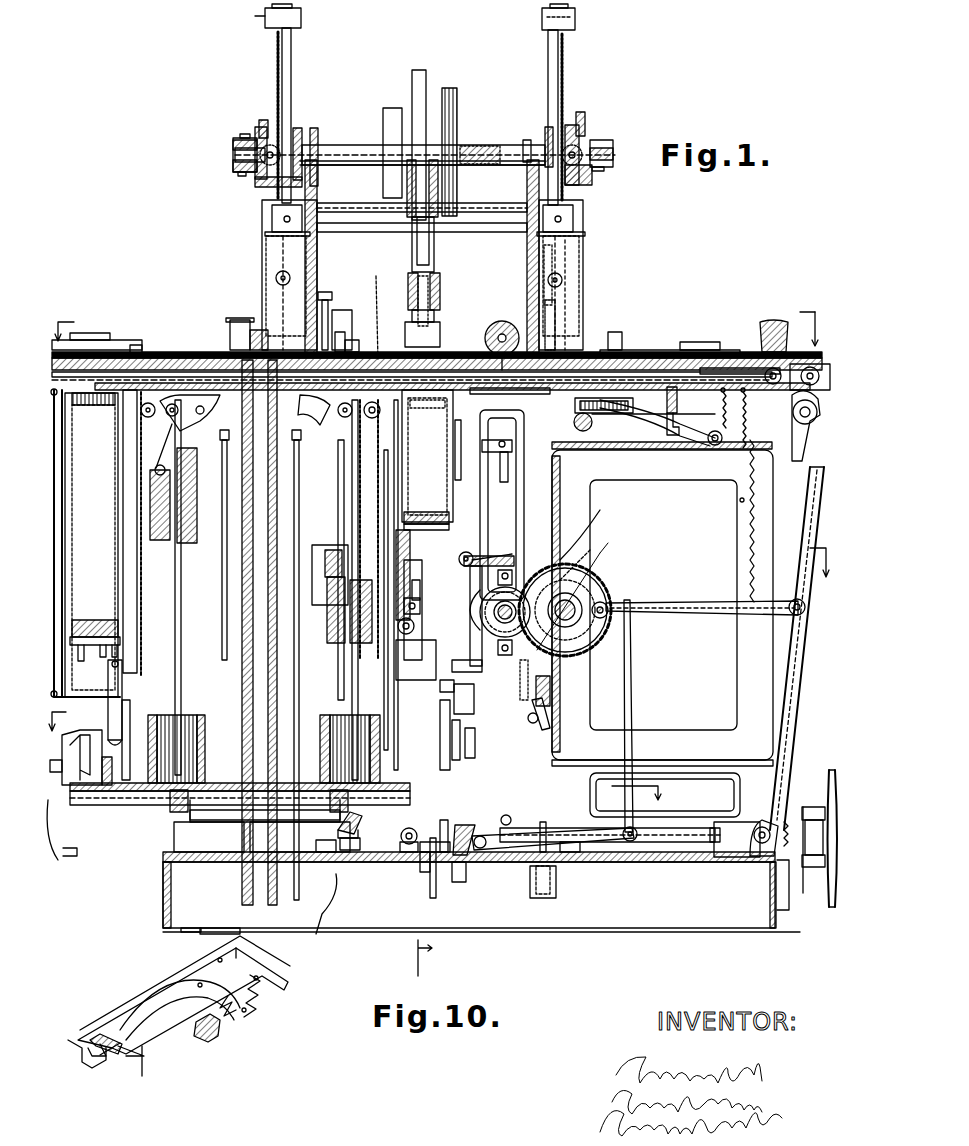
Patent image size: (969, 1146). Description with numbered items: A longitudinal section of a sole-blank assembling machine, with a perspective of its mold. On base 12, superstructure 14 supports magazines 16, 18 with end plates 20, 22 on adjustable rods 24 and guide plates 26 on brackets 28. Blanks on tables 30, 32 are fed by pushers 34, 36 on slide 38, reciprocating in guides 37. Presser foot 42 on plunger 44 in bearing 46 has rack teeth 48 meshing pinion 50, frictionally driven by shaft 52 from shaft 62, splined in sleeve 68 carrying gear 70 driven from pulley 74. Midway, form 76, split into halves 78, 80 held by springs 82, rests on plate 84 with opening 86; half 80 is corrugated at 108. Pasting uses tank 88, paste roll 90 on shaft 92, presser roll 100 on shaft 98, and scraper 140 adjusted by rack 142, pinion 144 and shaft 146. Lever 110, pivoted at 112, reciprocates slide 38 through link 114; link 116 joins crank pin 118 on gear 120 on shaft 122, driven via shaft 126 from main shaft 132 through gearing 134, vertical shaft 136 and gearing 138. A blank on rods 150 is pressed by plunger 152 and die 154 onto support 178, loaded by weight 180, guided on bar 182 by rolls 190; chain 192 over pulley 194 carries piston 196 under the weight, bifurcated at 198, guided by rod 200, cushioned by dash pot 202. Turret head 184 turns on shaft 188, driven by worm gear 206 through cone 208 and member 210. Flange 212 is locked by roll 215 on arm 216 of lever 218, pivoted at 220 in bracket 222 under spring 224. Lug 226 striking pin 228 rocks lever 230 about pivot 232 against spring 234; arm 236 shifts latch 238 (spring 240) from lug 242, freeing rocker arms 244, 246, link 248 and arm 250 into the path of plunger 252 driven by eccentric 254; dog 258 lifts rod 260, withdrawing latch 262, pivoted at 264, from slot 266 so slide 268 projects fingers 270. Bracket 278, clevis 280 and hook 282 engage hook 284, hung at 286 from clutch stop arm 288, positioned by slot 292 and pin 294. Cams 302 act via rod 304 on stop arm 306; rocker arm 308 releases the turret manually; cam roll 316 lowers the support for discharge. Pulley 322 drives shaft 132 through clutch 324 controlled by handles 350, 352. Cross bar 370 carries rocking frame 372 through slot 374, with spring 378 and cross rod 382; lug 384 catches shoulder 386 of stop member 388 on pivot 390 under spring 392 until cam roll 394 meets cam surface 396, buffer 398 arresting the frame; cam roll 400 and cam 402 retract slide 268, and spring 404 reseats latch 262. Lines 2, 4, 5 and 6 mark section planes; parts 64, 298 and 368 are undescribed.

In FIG. 1, the section line 2 is at (433, 957).
In FIG. 1, the section line 4 is at (439, 639).
In FIG. 1, the section line 5 is at (436, 343).
In FIG. 1, the section line 6 is at (490, 860).
In FIG. 1, the base or frame 12 is at (692, 914).
In FIG. 1, the superstructure 14 is at (364, 228).
In FIG. 1, the blank magazine 16 is at (314, 270).
In FIG. 1, the blank magazine 18 is at (536, 246).
In FIG. 1, the upright plate 20 is at (264, 254).
In FIG. 1, the upright plate 22 is at (587, 248).
In FIG. 1, the horizontally adjustable rods 24 is at (276, 278).
In FIG. 1, the plates 26 is at (174, 354).
In FIG. 1, the adjustable brackets 28 is at (160, 340).
In FIG. 1, the stationary table 30 is at (340, 344).
In FIG. 1, the stationary table 32 is at (564, 354).
In FIG. 1, the pusher plate 34 is at (366, 350).
In FIG. 1, the pusher plate 36 is at (670, 348).
In FIG. 1, the guides 37 is at (110, 350).
In FIG. 1, the sliding frame 38 is at (248, 332).
In FIG. 1, the presser foot 42 is at (272, 226).
In FIG. 1, the plunger 44 is at (295, 62).
In FIG. 1, the stationary bearing 46 is at (542, 130).
In FIG. 1, the rack teeth 48 is at (277, 62).
In FIG. 1, the pinion 50 is at (578, 147).
In FIG. 1, the shaft 52 is at (258, 144).
In FIG. 1, the horizontal rotary shaft 62 is at (358, 148).
In FIG. 1, the bearing block 64 is at (232, 156).
In FIG. 1, the sleeve 68 is at (490, 146).
In FIG. 1, the driving gear 70 is at (446, 90).
In FIG. 1, the driving pulley 74 is at (394, 114).
In FIG. 1, the blank assembling form or mold 76 is at (448, 416).
In FIG. 10, the form half 78 is at (146, 992).
In FIG. 10, the form half 80 is at (256, 1000).
In FIG. 10, the springs 82 is at (126, 1068).
In FIG. 1, the plate 84 is at (442, 346).
In FIG. 1, the opening 86 is at (384, 342).
In FIG. 1, the paste or cement containing tank 88 is at (526, 500).
In FIG. 1, the paste roll 90 is at (500, 452).
In FIG. 1, the shaft 92 is at (452, 434).
In FIG. 1, the shaft 98 is at (506, 324).
In FIG. 1, the presser roll 100 is at (450, 326).
In FIG. 10, the corrugations 108 is at (216, 1024).
In FIG. 1, the lever 110 is at (746, 664).
In FIG. 1, the pivot 112 is at (748, 866).
In FIG. 1, the link 114 is at (800, 368).
In FIG. 1, the link 116 is at (650, 628).
In FIG. 1, the crank pin 118 is at (598, 552).
In FIG. 1, the gear 120 is at (622, 618).
In FIG. 1, the shaft 122 is at (594, 548).
In FIG. 1, the shaft 126 is at (464, 604).
In FIG. 1, the main driving shaft 132 is at (698, 830).
In FIG. 1, the gearing 134 is at (558, 844).
In FIG. 1, the vertical shaft 136 is at (542, 838).
In FIG. 1, the gearing 138 is at (512, 564).
In FIG. 1, the scraper 140 is at (542, 282).
In FIG. 1, the rack 142 is at (578, 446).
In FIG. 1, the pinion 144 is at (590, 424).
In FIG. 1, the shaft 146 is at (558, 350).
In FIG. 1, the rods 150 is at (300, 478).
In FIG. 1, the plunger 152 is at (428, 234).
In FIG. 1, the die 154 is at (422, 292).
In FIG. 1, the shelf or support 178 is at (448, 520).
In FIG. 1, the weight 180 is at (318, 580).
In FIG. 1, the upright guide bar 182 is at (128, 566).
In FIG. 1, the turret head 184 is at (202, 440).
In FIG. 1, the stationary upright shaft 188 is at (260, 610).
In FIG. 1, the antifriction rolls 190 is at (410, 582).
In FIG. 1, the flexible cable or chain 192 is at (138, 542).
In FIG. 1, the loose pulley 194 is at (456, 456).
In FIG. 1, the piston 196 is at (196, 530).
In FIG. 1, the bifurcation 198 is at (282, 560).
In FIG. 1, the guide rod 200 is at (294, 720).
In FIG. 1, the dash pot 202 is at (180, 712).
In FIG. 1, the worm gear 206 is at (210, 862).
In FIG. 1, the friction cone 208 is at (218, 786).
In FIG. 1, the complemental conical member 210 is at (166, 814).
In FIG. 1, the flange 212 is at (98, 842).
In FIG. 1, the locking roll 215 is at (464, 746).
In FIG. 1, the upwardly projecting arm 216 is at (362, 814).
In FIG. 1, the lever 218 is at (418, 856).
In FIG. 1, the pivot 220 is at (386, 858).
In FIG. 1, the stationary bracket 222 is at (390, 868).
In FIG. 1, the spring 224 is at (362, 868).
In FIG. 1, the lug 226 is at (94, 628).
In FIG. 1, the yielding pin 228 is at (386, 660).
In FIG. 1, the lever 230 is at (454, 702).
In FIG. 1, the stationary pivot 232 is at (558, 682).
In FIG. 1, the spring 234 is at (458, 660).
In FIG. 1, the upright arm 236 is at (600, 653).
In FIG. 1, the latch 238 is at (608, 646).
In FIG. 1, the spring 240 is at (612, 634).
In FIG. 1, the lug 242 is at (626, 520).
In FIG. 1, the rocker arm 244 is at (610, 568).
In FIG. 1, the depending rocker arm 246 is at (640, 748).
In FIG. 1, the connecting link 248 is at (606, 852).
In FIG. 1, the swinging arm 250 is at (542, 896).
In FIG. 1, the plunger 252 is at (618, 718).
In FIG. 1, the eccentric 254 is at (524, 560).
In FIG. 1, the dog 258 is at (344, 886).
In FIG. 1, the spring depressed rod 260 is at (200, 632).
In FIG. 1, the latch 262 is at (166, 454).
In FIG. 1, the pivot 264 is at (290, 484).
In FIG. 1, the slot 266 is at (286, 434).
In FIG. 1, the slide member 268 is at (348, 352).
In FIG. 1, the fingers 270 is at (100, 350).
In FIG. 1, the bracket 278 is at (478, 622).
In FIG. 1, the clevis 280 is at (452, 666).
In FIG. 1, the hook 282 is at (548, 706).
In FIG. 1, the hook member 284 is at (496, 826).
In FIG. 1, the pivot 286 is at (450, 730).
In FIG. 1, the clutch stop arm 288 is at (440, 716).
In FIG. 1, the slot 292 is at (486, 870).
In FIG. 1, the pin 294 is at (472, 856).
In FIG. 1, the lever 298 is at (646, 610).
In FIG. 1, the cams 302 is at (102, 800).
In FIG. 1, the rod 304 is at (440, 684).
In FIG. 1, the clutch stop arm 306 is at (520, 528).
In FIG. 1, the rocker arm 308 is at (542, 664).
In FIG. 1, the cam roll 316 is at (108, 684).
In FIG. 1, the pulley 322 is at (832, 774).
In FIG. 1, the clutch 324 is at (816, 808).
In FIG. 1, the handle 350 is at (582, 112).
In FIG. 1, the handle 352 is at (262, 118).
In FIG. 1, the cap 368 is at (256, 18).
In FIG. 1, the cross bar 370 is at (718, 444).
In FIG. 1, the rocking frame 372 is at (742, 350).
In FIG. 1, the long slot 374 is at (710, 368).
In FIG. 1, the spring 378 is at (748, 558).
In FIG. 1, the cross rod 382 is at (812, 312).
In FIG. 1, the lug 384 is at (678, 442).
In FIG. 1, the shoulder 386 is at (716, 460).
In FIG. 1, the stop member 388 is at (692, 434).
In FIG. 1, the stationary pivot 390 is at (666, 484).
In FIG. 1, the spring 392 is at (678, 396).
In FIG. 1, the cam roll 394 is at (792, 458).
In FIG. 1, the cam surface 396 is at (740, 500).
In FIG. 1, the spring buffer 398 is at (700, 518).
In FIG. 1, the cam roll 400 is at (220, 346).
In FIG. 1, the stationary cam 402 is at (376, 356).
In FIG. 1, the spring 404 is at (394, 668).